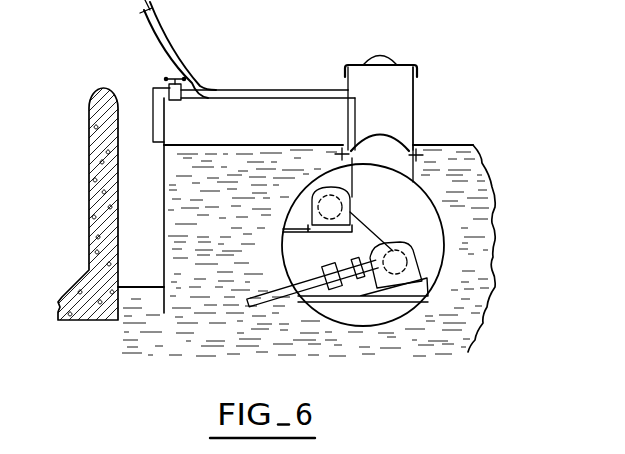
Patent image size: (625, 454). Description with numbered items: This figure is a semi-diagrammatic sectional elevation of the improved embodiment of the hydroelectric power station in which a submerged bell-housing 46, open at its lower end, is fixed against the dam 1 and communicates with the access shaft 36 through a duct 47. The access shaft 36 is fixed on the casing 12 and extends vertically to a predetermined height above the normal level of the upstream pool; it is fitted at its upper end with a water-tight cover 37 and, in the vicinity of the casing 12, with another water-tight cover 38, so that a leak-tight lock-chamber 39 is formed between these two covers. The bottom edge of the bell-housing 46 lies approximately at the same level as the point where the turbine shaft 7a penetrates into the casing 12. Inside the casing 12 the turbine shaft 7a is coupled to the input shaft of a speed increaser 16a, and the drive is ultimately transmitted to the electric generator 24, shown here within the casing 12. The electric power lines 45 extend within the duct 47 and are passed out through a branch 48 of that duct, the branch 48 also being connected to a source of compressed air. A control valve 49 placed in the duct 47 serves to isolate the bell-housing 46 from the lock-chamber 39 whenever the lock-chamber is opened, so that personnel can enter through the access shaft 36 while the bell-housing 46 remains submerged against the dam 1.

The dam 1 is at (89, 212).
The branch 48 is at (159, 42).
The bell-housing 46 is at (141, 177).
The control valve 49 is at (173, 101).
The duct 47 is at (273, 100).
The electric power lines 45 is at (355, 97).
The water-tight cover 38 is at (387, 137).
The water-tight cover 37 is at (401, 66).
The lock-chamber 39 is at (404, 92).
The access shaft 36 is at (416, 129).
The electric generator 24 is at (350, 211).
The speed increaser 16a is at (405, 243).
The casing 12 is at (452, 247).
The turbine shaft 7a is at (276, 305).